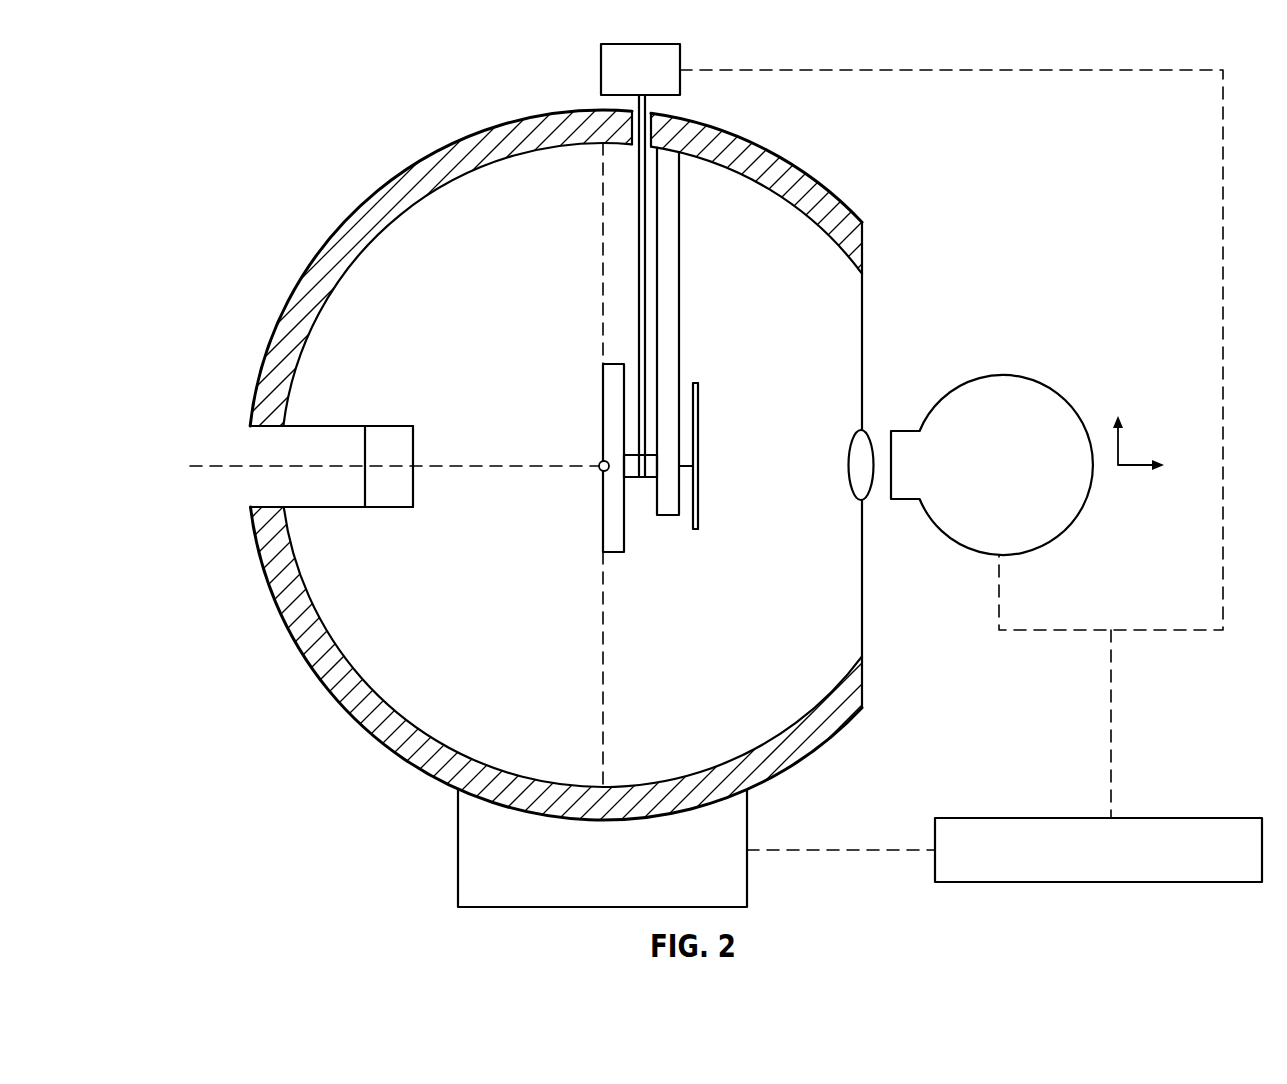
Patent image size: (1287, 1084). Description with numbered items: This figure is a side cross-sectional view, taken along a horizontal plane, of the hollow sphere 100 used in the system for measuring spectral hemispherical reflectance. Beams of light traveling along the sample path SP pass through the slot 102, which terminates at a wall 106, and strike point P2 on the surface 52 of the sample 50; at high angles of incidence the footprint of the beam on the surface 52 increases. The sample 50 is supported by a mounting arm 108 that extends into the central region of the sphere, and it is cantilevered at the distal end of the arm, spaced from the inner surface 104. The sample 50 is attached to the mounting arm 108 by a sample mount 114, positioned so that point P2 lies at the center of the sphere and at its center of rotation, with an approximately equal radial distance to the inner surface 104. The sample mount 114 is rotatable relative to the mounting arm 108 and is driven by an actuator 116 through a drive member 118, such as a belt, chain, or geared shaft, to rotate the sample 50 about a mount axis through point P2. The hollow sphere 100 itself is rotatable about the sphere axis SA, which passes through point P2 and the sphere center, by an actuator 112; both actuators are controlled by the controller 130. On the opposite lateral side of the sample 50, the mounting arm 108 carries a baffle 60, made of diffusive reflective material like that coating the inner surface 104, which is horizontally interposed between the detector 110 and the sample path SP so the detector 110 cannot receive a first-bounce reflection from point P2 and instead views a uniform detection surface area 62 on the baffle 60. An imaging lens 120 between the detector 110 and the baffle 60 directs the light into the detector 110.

The hollow sphere 100 is at (192, 90).
The slot 102 is at (243, 491).
The inner surface 104 is at (373, 272).
The wall 106 is at (388, 441).
The mounting arm 108 is at (680, 253).
The detector 110 is at (1002, 375).
The actuator 112 is at (624, 881).
The sample mount 114 is at (627, 478).
The actuator 116 is at (661, 85).
The drive member 118 is at (637, 214).
The imaging lens 120 is at (862, 431).
The controller 130 is at (1215, 818).
The sample 50 is at (587, 572).
The surface 52 is at (602, 507).
The baffle 60 is at (699, 497).
The detection surface area 62 is at (699, 418).
The point P2 is at (598, 468).
The sample path SP is at (214, 466).
The sphere axis SA is at (604, 667).